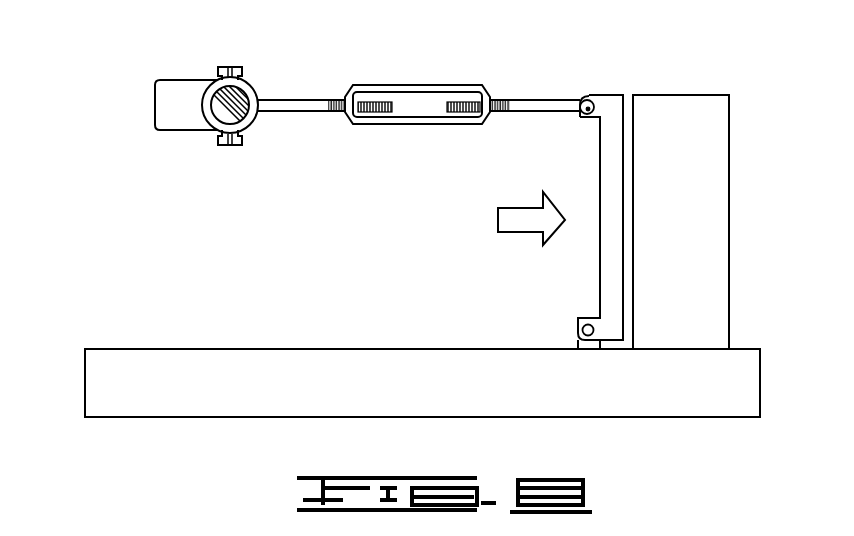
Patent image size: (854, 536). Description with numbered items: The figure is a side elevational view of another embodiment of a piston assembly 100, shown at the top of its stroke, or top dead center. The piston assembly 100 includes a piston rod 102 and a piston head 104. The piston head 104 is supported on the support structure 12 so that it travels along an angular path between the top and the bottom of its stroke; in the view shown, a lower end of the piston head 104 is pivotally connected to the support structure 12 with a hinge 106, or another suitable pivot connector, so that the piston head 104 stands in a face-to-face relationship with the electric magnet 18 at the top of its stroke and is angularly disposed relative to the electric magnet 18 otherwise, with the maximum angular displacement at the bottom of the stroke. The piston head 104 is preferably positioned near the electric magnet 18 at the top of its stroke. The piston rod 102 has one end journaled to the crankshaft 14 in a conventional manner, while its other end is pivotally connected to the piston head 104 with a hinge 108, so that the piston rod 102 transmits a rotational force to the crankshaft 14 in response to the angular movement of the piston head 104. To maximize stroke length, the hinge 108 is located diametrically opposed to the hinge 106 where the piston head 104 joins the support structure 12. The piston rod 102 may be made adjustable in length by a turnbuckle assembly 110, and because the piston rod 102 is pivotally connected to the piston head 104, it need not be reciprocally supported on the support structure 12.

The support structure 12 is at (134, 349).
The crankshaft 14 is at (212, 128).
The electric magnet 18 is at (731, 177).
The piston assembly 100 is at (523, 97).
The piston rod 102 is at (295, 100).
The piston head 104 is at (600, 237).
The hinge 106 is at (577, 340).
The hinge 108 is at (587, 115).
The turnbuckle assembly 110 is at (378, 125).